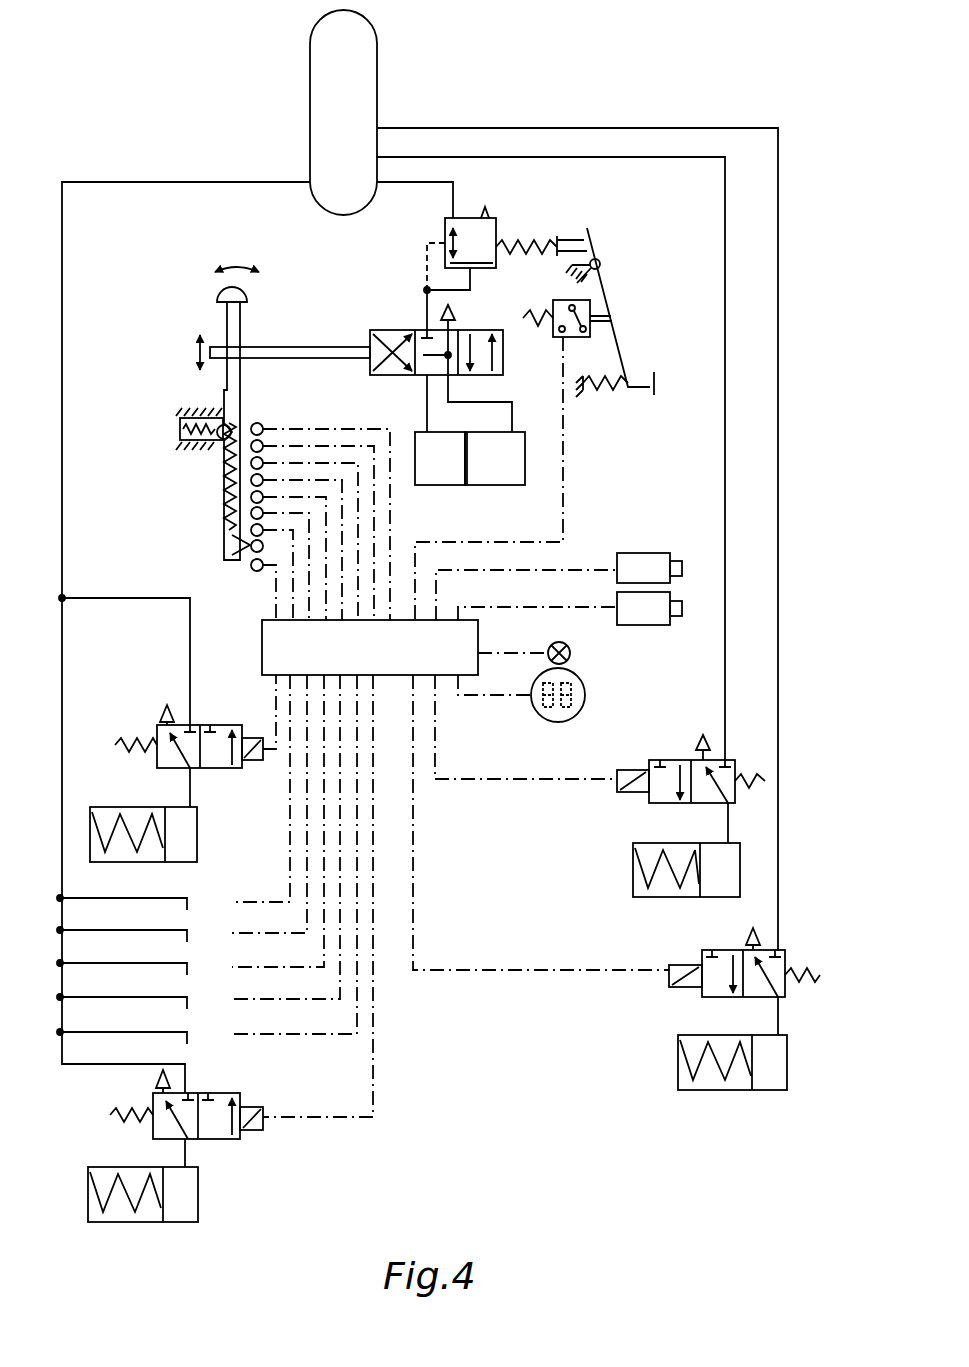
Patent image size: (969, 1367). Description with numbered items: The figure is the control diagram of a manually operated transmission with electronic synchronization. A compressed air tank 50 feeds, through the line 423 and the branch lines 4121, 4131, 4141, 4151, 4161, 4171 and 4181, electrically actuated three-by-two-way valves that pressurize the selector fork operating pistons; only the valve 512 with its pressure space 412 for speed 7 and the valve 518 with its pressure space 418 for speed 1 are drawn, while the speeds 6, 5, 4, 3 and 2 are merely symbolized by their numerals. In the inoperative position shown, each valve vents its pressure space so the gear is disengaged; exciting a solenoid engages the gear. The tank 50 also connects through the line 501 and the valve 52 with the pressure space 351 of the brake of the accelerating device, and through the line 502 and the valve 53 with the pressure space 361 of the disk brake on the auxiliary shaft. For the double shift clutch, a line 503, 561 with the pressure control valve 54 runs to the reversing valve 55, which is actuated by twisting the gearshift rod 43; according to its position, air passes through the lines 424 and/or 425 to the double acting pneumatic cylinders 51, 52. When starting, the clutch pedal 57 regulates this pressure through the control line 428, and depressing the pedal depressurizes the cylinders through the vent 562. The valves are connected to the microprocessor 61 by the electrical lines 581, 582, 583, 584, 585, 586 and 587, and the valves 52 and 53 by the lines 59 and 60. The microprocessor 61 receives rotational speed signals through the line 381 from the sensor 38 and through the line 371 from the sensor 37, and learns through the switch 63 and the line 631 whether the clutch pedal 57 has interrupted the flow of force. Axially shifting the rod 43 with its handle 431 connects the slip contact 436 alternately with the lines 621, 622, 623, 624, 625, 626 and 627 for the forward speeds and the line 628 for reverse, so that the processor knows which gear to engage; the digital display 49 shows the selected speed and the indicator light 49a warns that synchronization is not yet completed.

The compressed air tank 50 is at (377, 45).
The line 501 is at (632, 160).
The line 502 is at (612, 128).
The line 503 is at (418, 182).
The line 423 is at (210, 182).
The branch line 4121 is at (190, 622).
The pressure control valve 54 is at (467, 228).
The vent 562 is at (489, 212).
The line 561 is at (471, 283).
The control line 428 is at (425, 273).
The clutch pedal 57 is at (601, 266).
The electrical switch 63 is at (567, 332).
The line 631 is at (568, 412).
The reversing valve 55 is at (380, 376).
The line 424 is at (428, 416).
The line 425 is at (487, 403).
The double acting pneumatic cylinder 51 is at (443, 485).
The double acting pneumatic cylinder / 3/2-way valve 52 is at (493, 485).
The pressure space 351 is at (722, 897).
The 3/2-way valve 53 is at (678, 963).
The pressure space 361 is at (777, 1092).
The handle 431 is at (248, 297).
The gearshift rod 43 is at (241, 322).
The slip contact 436 is at (240, 545).
The line 621 is at (360, 432).
The line 622 is at (345, 450).
The line 623 is at (328, 467).
The line 624 is at (312, 484).
The line 625 is at (296, 500).
The line 626 is at (280, 517).
The line 627 is at (266, 534).
The line 628 is at (272, 574).
The microprocessor 61 is at (478, 637).
The line 381 is at (567, 566).
The sensor 38 is at (634, 553).
The line 371 is at (564, 607).
The sensor 37 is at (640, 626).
The indicator light 49a is at (570, 656).
The digital display 49 is at (586, 694).
The speed 7 / clutch disk 7 is at (178, 756).
The 3/2-way valve 512 is at (222, 733).
The electrical line 581 is at (270, 668).
The pressure space 412 is at (198, 835).
The branch line 4131 is at (108, 898).
The branch line 4141 is at (106, 930).
The branch line 4151 is at (100, 963).
The branch line 4161 is at (96, 997).
The branch line 4171 is at (88, 1032).
The branch line 4181 is at (80, 1064).
The speed 6 / clutch disk 6 is at (200, 901).
The speed 5 is at (200, 933).
The speed 4 is at (200, 966).
The speed 3 / double shift clutch 3 is at (200, 1000).
The speed 2 is at (200, 1035).
The electrical line 582 is at (238, 896).
The electrical line 583 is at (240, 927).
The electrical line 584 is at (240, 961).
The electrical line 585 is at (244, 993).
The electrical line 586 is at (248, 1028).
The electrical line 587 is at (278, 1110).
The electrical line 59 is at (530, 779).
The electrical line 60 is at (518, 970).
The speed 1 is at (175, 1118).
The 3/2-way valve 518 is at (222, 1098).
The pressure space 418 is at (197, 1190).